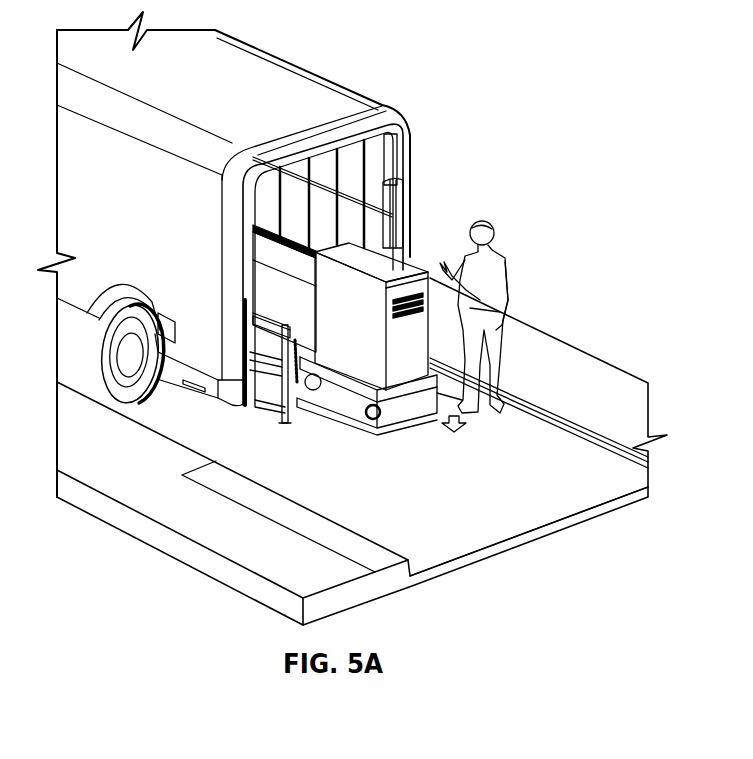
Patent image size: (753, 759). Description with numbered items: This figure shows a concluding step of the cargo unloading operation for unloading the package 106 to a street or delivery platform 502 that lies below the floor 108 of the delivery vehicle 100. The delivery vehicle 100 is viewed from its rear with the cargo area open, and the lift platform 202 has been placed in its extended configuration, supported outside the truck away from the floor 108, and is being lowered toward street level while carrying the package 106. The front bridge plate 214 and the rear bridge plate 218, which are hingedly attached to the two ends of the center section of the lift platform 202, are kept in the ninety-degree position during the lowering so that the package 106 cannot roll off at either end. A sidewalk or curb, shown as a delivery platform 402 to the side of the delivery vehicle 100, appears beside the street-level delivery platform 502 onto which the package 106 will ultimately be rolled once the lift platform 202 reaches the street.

The delivery vehicle 100 is at (383, 97).
The package 106 is at (413, 253).
The floor 108 is at (242, 306).
The lift platform 202 is at (355, 420).
The front bridge plate 214 is at (260, 404).
The rear bridge plate 218 is at (388, 418).
The delivery platform 402 is at (607, 428).
The delivery platform 502 is at (535, 480).